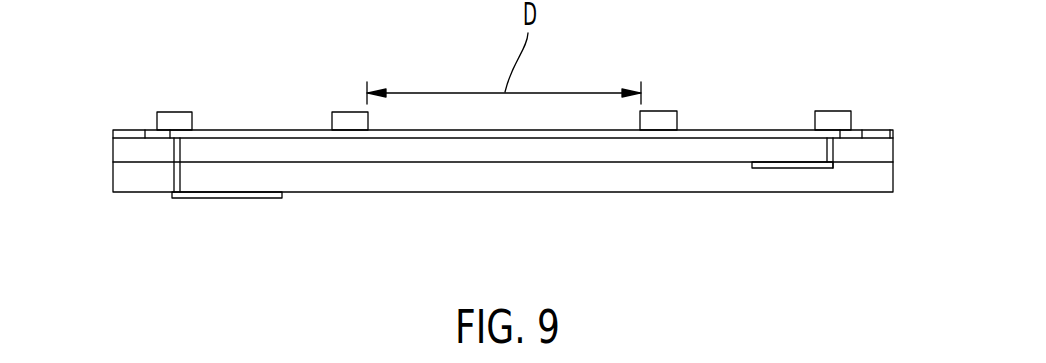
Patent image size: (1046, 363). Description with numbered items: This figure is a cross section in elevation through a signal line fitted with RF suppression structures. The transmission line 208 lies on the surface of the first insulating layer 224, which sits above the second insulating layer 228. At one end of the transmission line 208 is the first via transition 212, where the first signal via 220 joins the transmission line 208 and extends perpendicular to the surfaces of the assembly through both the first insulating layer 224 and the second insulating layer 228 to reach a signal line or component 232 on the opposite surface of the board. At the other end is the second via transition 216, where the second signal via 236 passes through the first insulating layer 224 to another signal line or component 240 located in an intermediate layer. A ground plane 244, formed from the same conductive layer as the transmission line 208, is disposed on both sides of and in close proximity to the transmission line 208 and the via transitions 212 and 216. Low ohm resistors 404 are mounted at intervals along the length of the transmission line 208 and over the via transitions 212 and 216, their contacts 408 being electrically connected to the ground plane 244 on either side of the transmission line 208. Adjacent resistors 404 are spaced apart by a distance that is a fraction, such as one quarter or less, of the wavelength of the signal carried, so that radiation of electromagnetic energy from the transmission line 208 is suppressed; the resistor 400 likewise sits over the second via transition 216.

The transmission line 208 is at (537, 130).
The first via transition 212 is at (177, 140).
The second via transition 216 is at (836, 166).
The first signal via 220 is at (173, 178).
The first insulating layer 224 is at (878, 147).
The second insulating layer 228 is at (112, 182).
The signal line or component 232 is at (240, 198).
The second signal via 236 is at (824, 152).
The signal line or component 240 is at (779, 168).
The ground plane 244 is at (127, 135).
The component / die 400 is at (826, 110).
The low ohm resistor 404 is at (186, 112).
The contact 408 is at (347, 120).